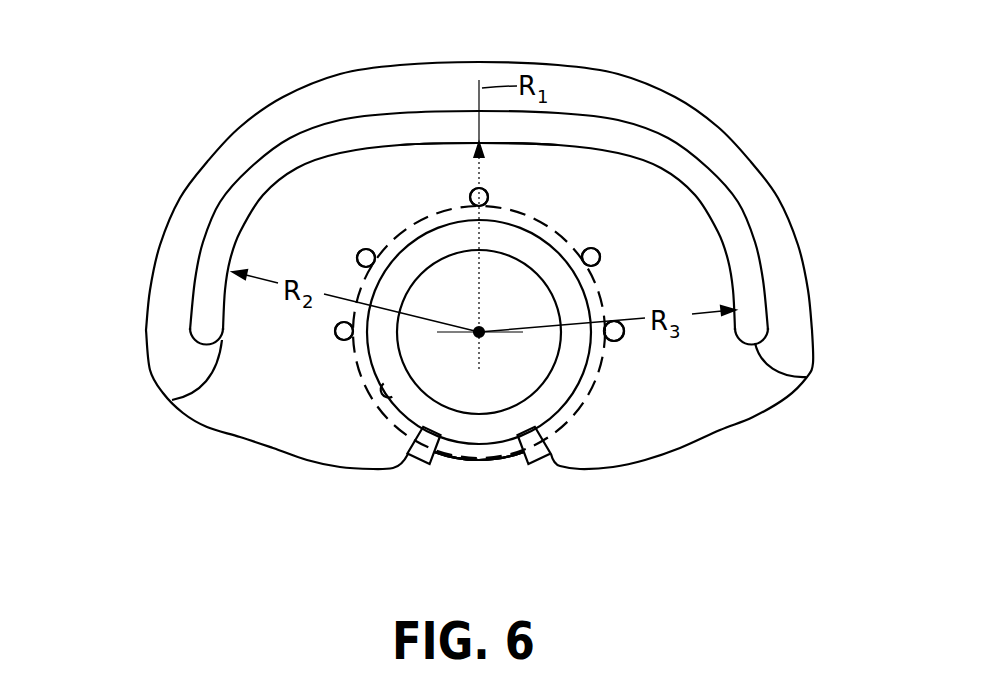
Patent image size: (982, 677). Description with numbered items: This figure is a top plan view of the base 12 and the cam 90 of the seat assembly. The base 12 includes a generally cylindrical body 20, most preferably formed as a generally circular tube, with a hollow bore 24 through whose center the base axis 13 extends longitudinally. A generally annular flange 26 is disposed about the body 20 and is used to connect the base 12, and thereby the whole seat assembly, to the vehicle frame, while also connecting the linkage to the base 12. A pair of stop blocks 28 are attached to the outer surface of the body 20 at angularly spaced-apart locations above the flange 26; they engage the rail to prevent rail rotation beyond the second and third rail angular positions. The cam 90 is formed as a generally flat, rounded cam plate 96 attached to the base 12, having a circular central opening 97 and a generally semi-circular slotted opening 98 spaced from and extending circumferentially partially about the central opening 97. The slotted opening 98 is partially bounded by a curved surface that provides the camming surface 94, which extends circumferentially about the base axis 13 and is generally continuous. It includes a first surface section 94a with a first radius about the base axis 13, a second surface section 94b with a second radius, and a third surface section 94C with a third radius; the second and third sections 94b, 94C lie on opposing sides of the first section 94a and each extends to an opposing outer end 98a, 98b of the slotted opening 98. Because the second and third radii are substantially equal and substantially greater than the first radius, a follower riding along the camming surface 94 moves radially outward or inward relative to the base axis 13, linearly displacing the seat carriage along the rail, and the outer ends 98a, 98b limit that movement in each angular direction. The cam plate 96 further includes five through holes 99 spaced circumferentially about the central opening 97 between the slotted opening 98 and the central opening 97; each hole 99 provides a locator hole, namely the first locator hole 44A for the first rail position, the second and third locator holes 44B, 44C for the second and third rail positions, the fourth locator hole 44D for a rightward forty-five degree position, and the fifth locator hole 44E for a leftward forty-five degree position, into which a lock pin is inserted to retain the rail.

The cam 90 is at (126, 121).
The slotted opening 98 is at (697, 186).
The outer end of slotted opening 98a is at (175, 398).
The outer end of slotted opening 98b is at (806, 377).
The camming surface 94 is at (611, 149).
The first surface section 94a is at (453, 143).
The second surface section 94b is at (193, 297).
The third surface section 94C is at (733, 282).
The cam plate 96 is at (242, 439).
The annular flange 26 is at (472, 459).
The base body 20 is at (564, 406).
The hollow bore 24 is at (562, 380).
The base axis 13 is at (477, 335).
The stop blocks 28 is at (423, 455).
The central opening 97 is at (392, 398).
The base 12 is at (513, 492).
The first locator hole 44A is at (490, 194).
The second locator hole 44B is at (333, 331).
The third locator hole 44C is at (617, 342).
The fourth locator hole 44D is at (356, 255).
The fifth locator hole 44E is at (598, 249).
The through holes 99 is at (471, 195).